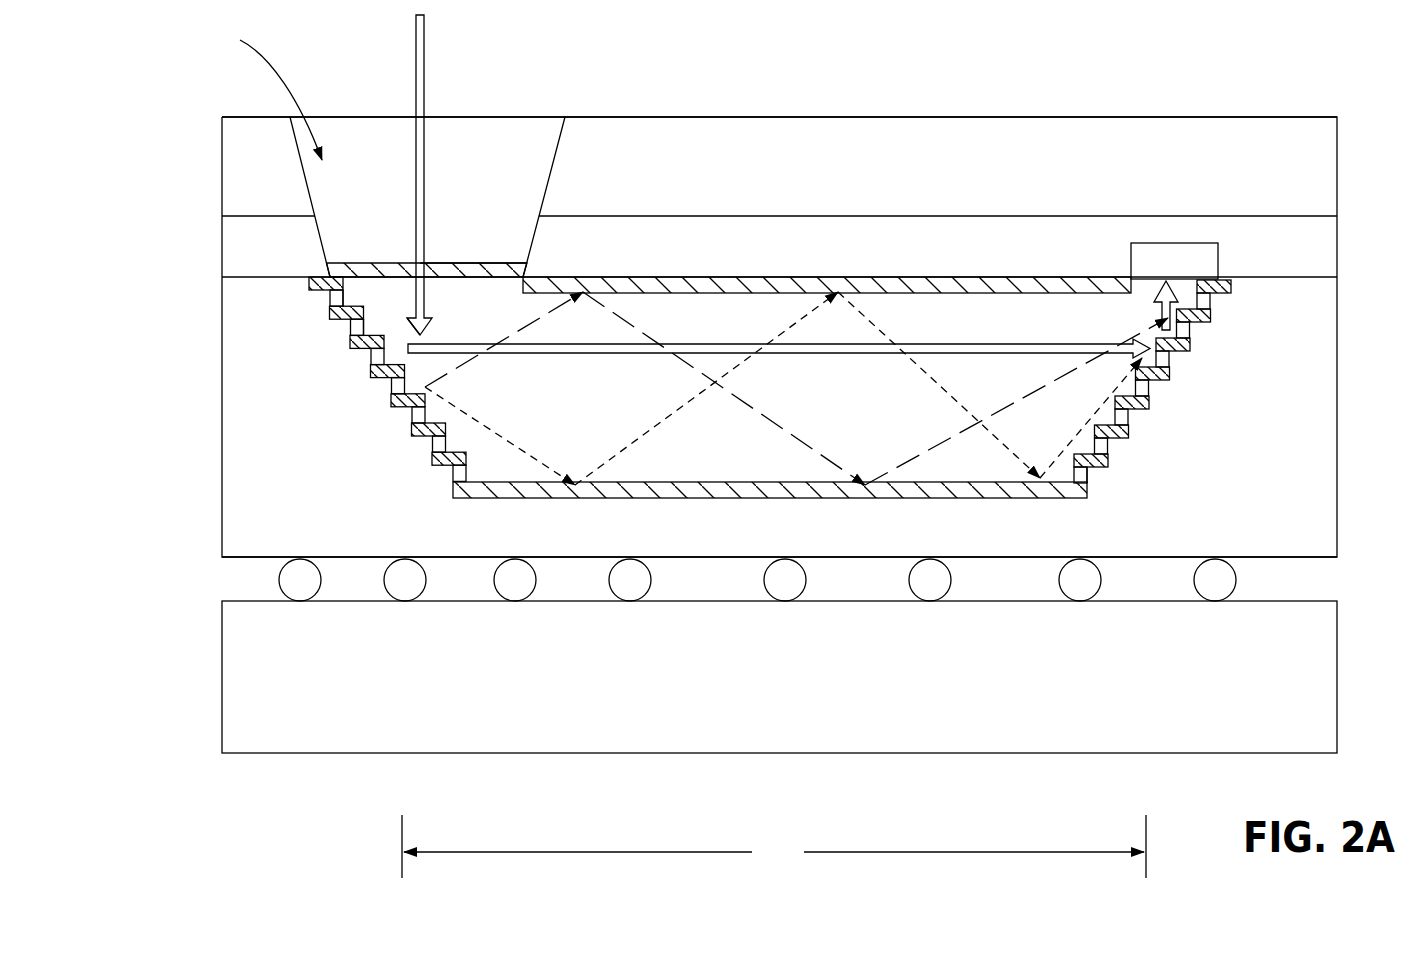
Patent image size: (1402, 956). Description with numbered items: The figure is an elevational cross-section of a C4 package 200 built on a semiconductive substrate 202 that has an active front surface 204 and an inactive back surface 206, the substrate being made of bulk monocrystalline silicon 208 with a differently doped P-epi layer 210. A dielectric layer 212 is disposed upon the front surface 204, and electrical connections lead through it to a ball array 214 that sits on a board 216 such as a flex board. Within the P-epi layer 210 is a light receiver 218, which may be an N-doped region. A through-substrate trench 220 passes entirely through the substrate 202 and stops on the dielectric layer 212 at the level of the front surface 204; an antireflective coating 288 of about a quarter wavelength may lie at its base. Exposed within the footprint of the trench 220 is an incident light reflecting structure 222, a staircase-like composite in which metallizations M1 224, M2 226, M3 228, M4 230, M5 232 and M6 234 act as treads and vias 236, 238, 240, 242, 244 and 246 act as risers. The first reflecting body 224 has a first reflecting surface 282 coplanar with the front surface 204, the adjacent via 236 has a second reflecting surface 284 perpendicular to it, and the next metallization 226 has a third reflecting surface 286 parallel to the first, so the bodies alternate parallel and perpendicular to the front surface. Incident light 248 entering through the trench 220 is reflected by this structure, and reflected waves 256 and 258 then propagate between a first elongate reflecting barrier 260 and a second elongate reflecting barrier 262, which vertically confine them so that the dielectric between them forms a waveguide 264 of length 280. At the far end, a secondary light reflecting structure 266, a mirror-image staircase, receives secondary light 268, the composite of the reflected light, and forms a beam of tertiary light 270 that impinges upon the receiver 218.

The C4 package 200 is at (1097, 74).
The semiconductive substrate 202 is at (212, 277).
The front surface 204 is at (880, 305).
The back surface 206 is at (232, 117).
The bulk monocrystalline silicon 208 is at (246, 179).
The P-epi layer 210 is at (256, 257).
The dielectric layer 212 is at (716, 458).
The ball array 214 is at (205, 603).
The board 216 is at (724, 698).
The light receiver 218 is at (1159, 273).
The through-substrate trench 220 is at (269, 88).
The incident light reflecting structure 222 is at (267, 454).
The metal-1 (M1) metallization 224 is at (314, 292).
The M2 metallization 226 is at (350, 340).
The M3 metallization 228 is at (370, 377).
The M4 metallization 230 is at (393, 398).
The M5 metallization 232 is at (420, 430).
The M6 metallization 234 is at (440, 462).
The via 236 is at (350, 327).
The via 238 is at (368, 356).
The via 240 is at (393, 388).
The via 242 is at (410, 416).
The via 244 is at (432, 448).
The via 246 is at (452, 478).
The incident light 248 is at (424, 85).
The reflected wave 256 is at (520, 327).
The reflected wave 258 is at (528, 450).
The first elongate reflecting barrier 260 is at (316, 277).
The second elongate reflecting barrier 262 is at (868, 497).
The waveguide 264 is at (985, 532).
The secondary light reflecting structure 266 is at (1196, 420).
The secondary light 268 is at (1005, 344).
The tertiary light 270 is at (1212, 292).
The length 280 is at (774, 846).
The first reflecting surface 282 is at (359, 298).
The second reflecting surface 284 is at (369, 326).
The third reflecting surface 286 is at (410, 305).
The antireflective coating 288 is at (480, 263).